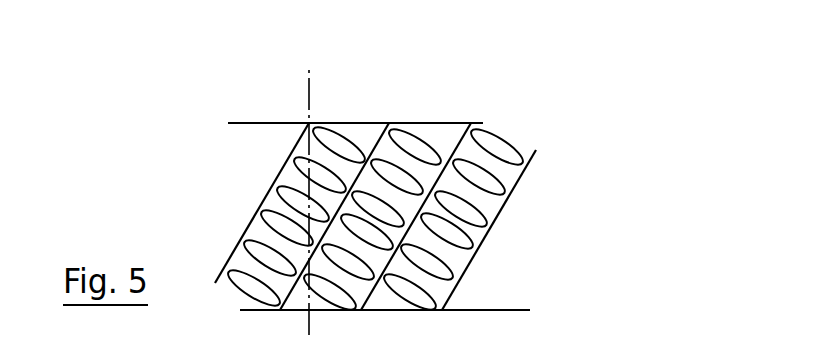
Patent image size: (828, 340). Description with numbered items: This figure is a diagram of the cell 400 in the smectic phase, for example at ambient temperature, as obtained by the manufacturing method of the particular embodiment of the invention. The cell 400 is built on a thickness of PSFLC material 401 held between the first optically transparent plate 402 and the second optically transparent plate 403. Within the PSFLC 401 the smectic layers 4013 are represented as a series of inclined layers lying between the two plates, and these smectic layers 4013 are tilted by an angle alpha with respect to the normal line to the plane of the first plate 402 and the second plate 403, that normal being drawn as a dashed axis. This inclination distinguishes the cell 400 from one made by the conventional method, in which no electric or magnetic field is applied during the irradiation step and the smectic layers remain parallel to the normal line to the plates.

The cell 400 is at (203, 147).
The PSFLC material 401 is at (243, 220).
The first optically transparent plate 402 is at (433, 122).
The second optically transparent plate 403 is at (490, 311).
The smectic layers 4013 is at (500, 215).